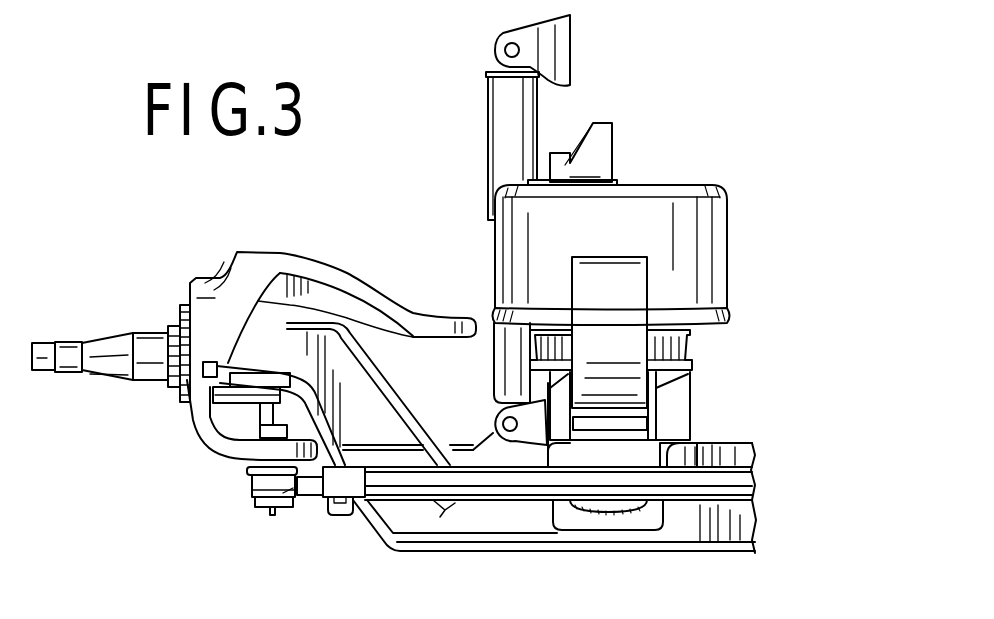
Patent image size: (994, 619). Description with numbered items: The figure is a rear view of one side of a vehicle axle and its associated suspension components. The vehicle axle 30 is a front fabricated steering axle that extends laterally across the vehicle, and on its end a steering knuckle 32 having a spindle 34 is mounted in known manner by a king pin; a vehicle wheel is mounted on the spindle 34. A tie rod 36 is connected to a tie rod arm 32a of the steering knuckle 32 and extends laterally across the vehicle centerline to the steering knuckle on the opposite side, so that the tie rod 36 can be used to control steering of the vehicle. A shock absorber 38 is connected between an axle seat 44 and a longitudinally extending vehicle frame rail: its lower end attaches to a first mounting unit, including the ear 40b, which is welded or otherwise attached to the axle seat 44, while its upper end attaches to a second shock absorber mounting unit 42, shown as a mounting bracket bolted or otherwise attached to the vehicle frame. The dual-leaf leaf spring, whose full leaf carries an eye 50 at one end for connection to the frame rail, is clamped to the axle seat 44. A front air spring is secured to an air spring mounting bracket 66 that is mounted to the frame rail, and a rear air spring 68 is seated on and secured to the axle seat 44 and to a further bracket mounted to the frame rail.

The vehicle axle 30 is at (712, 532).
The steering knuckle 32 is at (207, 297).
The tie rod arm 32a is at (233, 445).
The spindle 34 is at (103, 372).
The tie rod 36 is at (482, 487).
The shock absorber 38 is at (510, 97).
The ear 40b is at (530, 420).
The second shock absorber mounting unit 42 is at (553, 47).
The axle seat 44 is at (647, 513).
The eye 50 is at (622, 345).
The air spring mounting bracket 66 is at (598, 152).
The rear air spring 68 is at (707, 218).